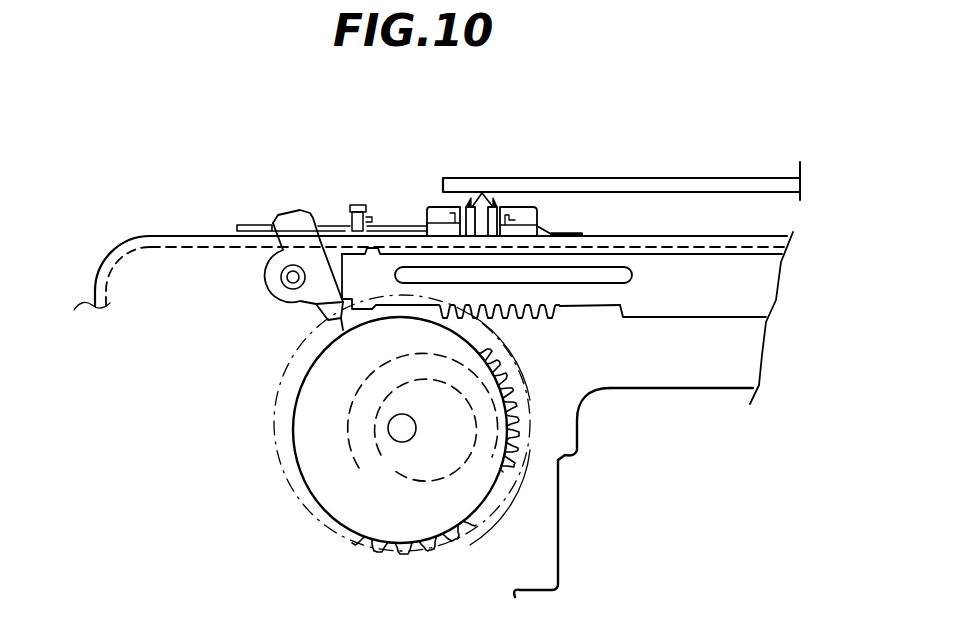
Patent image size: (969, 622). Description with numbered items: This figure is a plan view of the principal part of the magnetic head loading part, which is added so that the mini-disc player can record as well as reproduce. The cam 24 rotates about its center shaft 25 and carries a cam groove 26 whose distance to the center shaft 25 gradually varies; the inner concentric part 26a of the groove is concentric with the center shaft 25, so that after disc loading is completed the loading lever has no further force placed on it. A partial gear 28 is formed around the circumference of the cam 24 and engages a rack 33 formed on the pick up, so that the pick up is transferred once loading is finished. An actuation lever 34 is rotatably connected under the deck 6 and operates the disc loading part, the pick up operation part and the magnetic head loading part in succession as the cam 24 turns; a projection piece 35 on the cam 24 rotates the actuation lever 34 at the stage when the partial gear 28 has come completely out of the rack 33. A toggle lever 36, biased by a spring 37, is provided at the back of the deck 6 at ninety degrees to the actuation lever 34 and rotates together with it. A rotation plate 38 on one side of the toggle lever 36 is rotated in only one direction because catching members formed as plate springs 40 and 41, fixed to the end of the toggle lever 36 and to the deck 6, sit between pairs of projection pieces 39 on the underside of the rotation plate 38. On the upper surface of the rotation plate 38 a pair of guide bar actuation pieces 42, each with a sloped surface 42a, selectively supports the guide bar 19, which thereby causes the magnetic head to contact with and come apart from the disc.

The deck 6 is at (128, 263).
The guide bar 19 is at (716, 187).
The cam 24 is at (303, 432).
The center shaft 25 is at (405, 433).
The cam groove 26 is at (477, 387).
The concentric part 26a is at (368, 465).
The partial gear 28 is at (508, 420).
The rack 33 is at (717, 305).
The actuation lever 34 is at (262, 282).
The projection piece 35 is at (323, 320).
The toggle lever 36 is at (253, 226).
The spring 37 is at (347, 220).
The rotation plate 38 is at (430, 207).
The projection pieces 39 is at (533, 218).
The plate spring 40 is at (423, 224).
The plate spring 41 is at (573, 235).
The guide bar actuation pieces 42 is at (483, 194).
The sloped surface 42a is at (512, 218).